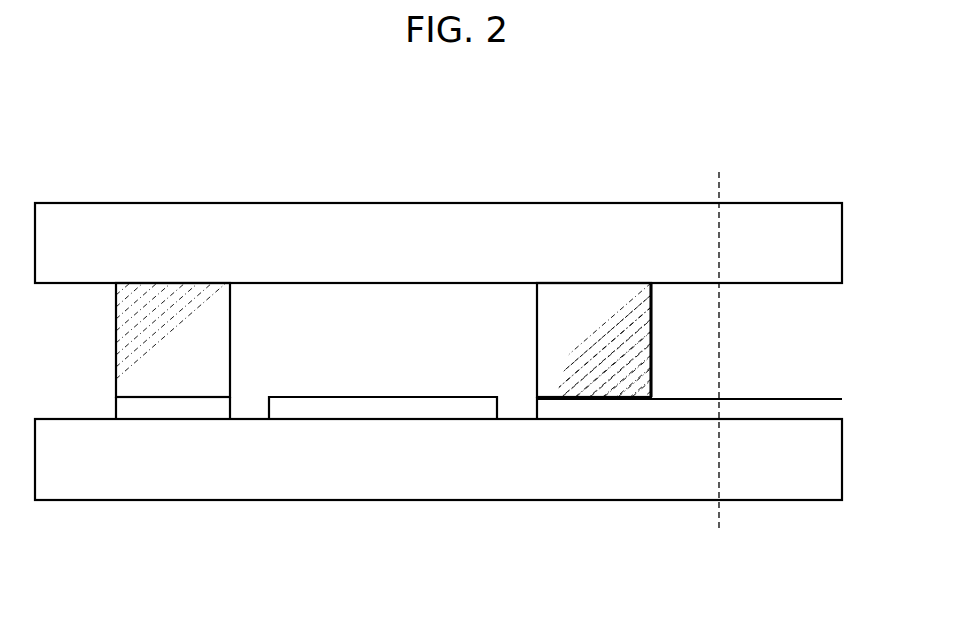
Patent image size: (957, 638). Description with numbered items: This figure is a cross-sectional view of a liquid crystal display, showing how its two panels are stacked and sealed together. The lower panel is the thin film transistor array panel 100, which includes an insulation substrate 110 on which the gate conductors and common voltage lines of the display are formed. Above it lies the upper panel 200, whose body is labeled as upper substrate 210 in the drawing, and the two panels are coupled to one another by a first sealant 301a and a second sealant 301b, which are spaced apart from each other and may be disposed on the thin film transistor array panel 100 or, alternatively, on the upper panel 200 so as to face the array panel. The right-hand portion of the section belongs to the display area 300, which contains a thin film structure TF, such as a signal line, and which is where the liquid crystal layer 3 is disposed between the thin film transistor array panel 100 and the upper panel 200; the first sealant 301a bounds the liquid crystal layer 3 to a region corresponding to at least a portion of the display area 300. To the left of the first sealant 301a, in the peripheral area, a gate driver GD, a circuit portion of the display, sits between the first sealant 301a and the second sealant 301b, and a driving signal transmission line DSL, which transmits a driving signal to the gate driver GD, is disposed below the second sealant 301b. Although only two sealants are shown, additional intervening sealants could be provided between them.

The upper panel 200 is at (469, 220).
The upper substrate body 210 is at (403, 224).
The thin film transistor array panel 100 is at (469, 481).
The insulation substrate 110 is at (506, 482).
The liquid crystal layer 3 is at (497, 331).
The first sealant 301a is at (588, 300).
The second sealant 301b is at (186, 300).
The display area 300 is at (842, 179).
The driving signal transmission line DSL is at (180, 407).
The gate driver GD is at (371, 408).
The thin film structure TF is at (594, 408).